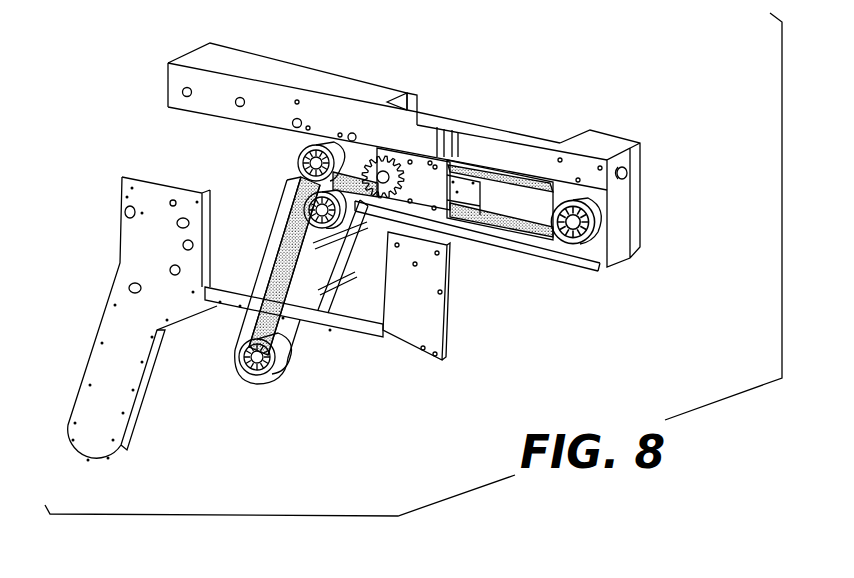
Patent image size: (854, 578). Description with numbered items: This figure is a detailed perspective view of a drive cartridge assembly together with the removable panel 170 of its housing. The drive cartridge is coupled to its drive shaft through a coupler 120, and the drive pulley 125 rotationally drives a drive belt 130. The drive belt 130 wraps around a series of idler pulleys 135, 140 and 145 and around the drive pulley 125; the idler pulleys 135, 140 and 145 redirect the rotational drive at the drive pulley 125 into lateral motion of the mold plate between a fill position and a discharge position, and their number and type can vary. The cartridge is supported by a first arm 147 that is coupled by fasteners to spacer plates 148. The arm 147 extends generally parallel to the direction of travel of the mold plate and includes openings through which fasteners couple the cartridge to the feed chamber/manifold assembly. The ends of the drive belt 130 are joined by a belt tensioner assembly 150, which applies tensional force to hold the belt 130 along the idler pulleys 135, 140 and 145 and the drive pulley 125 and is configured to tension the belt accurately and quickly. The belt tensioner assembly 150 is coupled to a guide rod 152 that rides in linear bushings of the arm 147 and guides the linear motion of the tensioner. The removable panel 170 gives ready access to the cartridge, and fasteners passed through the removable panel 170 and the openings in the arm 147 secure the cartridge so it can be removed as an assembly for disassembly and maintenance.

The coupler 120 is at (252, 368).
The drive pulley 125 is at (293, 353).
The drive belt 130 is at (533, 228).
The idler pulley 135 is at (303, 222).
The idler pulley 140 is at (607, 266).
The idler pulley 145 is at (343, 160).
The first arm 147 is at (507, 152).
The spacer plate 148 is at (280, 194).
The belt tensioner assembly 150 is at (420, 178).
The guide rod 152 is at (630, 170).
The removable panel 170 is at (107, 418).